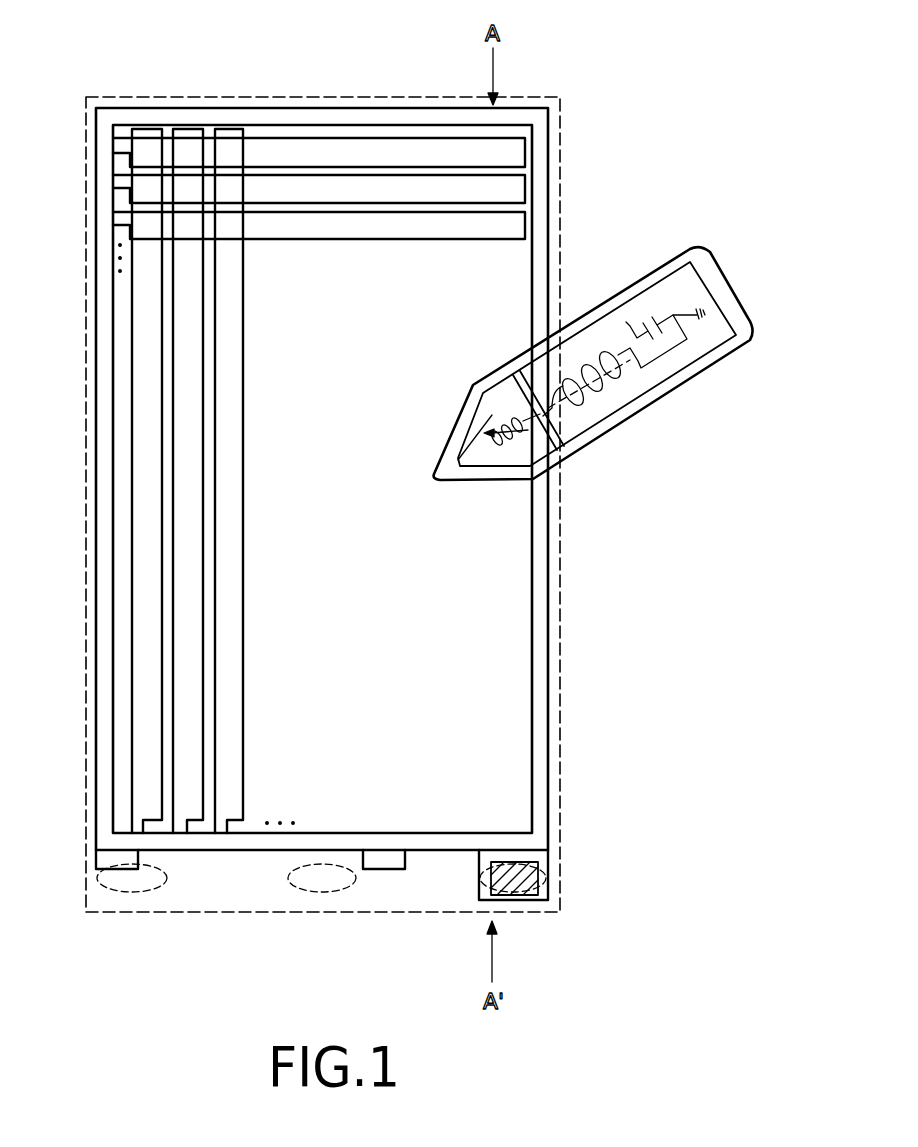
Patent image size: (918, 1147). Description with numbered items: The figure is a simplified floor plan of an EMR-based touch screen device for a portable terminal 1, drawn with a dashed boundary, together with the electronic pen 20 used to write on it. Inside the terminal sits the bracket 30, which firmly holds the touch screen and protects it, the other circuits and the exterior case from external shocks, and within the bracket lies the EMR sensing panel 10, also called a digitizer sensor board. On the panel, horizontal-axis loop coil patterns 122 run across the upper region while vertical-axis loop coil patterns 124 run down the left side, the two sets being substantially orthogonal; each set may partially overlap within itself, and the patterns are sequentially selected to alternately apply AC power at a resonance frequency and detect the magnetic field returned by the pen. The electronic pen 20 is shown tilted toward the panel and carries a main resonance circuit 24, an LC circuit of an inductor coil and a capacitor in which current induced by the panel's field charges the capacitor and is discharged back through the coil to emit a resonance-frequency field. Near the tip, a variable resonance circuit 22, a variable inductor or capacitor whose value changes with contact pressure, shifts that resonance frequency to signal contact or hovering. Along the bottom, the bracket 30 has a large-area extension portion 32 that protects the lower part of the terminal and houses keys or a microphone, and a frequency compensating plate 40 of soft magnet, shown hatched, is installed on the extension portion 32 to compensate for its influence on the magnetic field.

The portable terminal 1 is at (316, 93).
The EMR sensing panel 10 is at (513, 755).
The electronic pen 20 is at (733, 282).
The variable resonance circuit 22 is at (552, 467).
The main resonance circuit 24 is at (673, 378).
The bracket 30 is at (540, 648).
The extension portion 32 is at (550, 888).
The frequency compensating plate 40 is at (545, 870).
The horizontal-axis loop coil patterns 122 is at (525, 226).
The vertical-axis loop coil patterns 124 is at (230, 128).